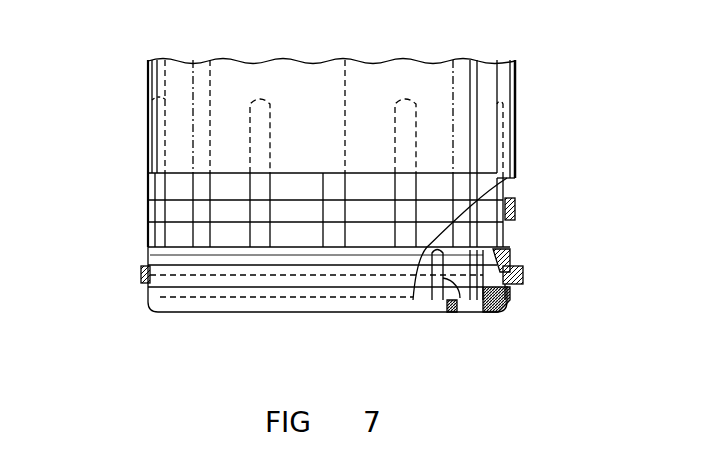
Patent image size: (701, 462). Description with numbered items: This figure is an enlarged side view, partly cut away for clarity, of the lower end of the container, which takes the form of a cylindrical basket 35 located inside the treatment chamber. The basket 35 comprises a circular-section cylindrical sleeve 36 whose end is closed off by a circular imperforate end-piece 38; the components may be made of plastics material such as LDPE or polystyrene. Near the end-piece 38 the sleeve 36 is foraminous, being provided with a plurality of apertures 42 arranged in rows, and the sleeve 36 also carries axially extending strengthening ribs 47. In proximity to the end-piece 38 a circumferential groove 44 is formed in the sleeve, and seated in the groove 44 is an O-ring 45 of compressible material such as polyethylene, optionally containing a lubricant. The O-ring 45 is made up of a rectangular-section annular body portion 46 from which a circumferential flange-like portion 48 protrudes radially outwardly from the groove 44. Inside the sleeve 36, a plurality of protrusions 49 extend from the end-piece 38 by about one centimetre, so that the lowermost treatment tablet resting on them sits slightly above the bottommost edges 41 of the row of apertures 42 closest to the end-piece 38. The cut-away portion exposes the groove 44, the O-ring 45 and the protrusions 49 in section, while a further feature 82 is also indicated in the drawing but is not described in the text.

The basket 35 is at (540, 107).
The sleeve 36 is at (488, 86).
The end-piece 38 is at (418, 306).
The bottommost edges 41 is at (292, 240).
The apertures 42 is at (230, 233).
The circumferential groove 44 is at (480, 303).
The O-ring 45 is at (540, 272).
The annular body portion 46 is at (150, 277).
The strengthening ribs 47 is at (205, 82).
The flange-like portion 48 is at (140, 266).
The protrusions 49 is at (458, 303).
The ribs 82 is at (360, 233).